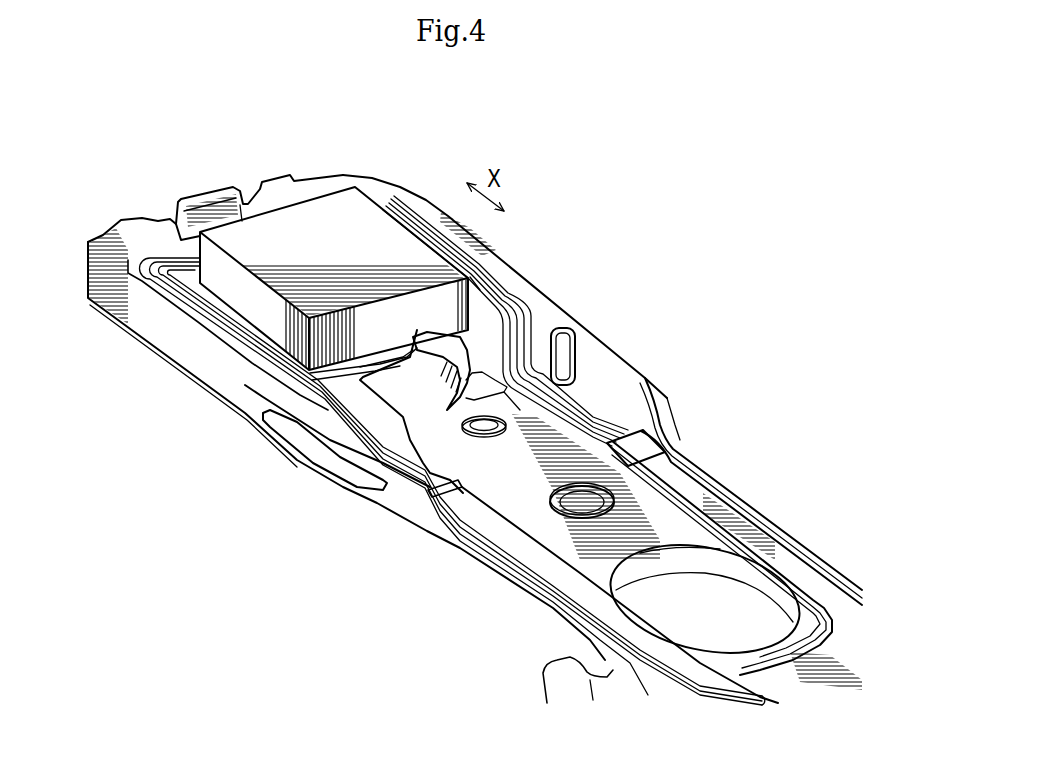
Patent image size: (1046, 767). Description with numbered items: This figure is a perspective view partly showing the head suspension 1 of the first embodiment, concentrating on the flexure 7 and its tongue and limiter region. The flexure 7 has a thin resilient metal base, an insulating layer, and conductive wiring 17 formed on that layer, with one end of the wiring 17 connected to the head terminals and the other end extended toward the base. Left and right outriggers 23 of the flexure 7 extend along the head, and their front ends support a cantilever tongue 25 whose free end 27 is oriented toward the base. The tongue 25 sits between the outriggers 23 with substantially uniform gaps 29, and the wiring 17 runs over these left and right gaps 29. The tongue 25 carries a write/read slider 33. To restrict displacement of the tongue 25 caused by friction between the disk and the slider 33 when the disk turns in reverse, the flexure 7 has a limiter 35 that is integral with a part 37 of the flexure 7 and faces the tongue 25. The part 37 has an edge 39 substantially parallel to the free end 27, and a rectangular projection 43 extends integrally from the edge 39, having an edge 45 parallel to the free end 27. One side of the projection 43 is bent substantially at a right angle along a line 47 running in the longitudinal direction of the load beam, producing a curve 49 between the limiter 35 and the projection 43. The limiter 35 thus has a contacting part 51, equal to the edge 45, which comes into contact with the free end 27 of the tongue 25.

The head suspension 1 is at (645, 190).
The flexure 7 is at (667, 524).
The wiring 17 is at (473, 303).
The outriggers 23 is at (489, 259).
The tongue 25 is at (278, 358).
The free end 27 is at (343, 368).
The gaps 29 is at (198, 327).
The write/read slider 33 is at (326, 222).
The limiter 35 is at (468, 382).
The part of the flexure 37 is at (548, 408).
The edge 39 is at (460, 460).
The projection 43 is at (407, 390).
The edge of the projection 45 is at (363, 357).
The line 47 is at (445, 383).
The curve 49 is at (473, 433).
The contacting part 51 is at (407, 343).